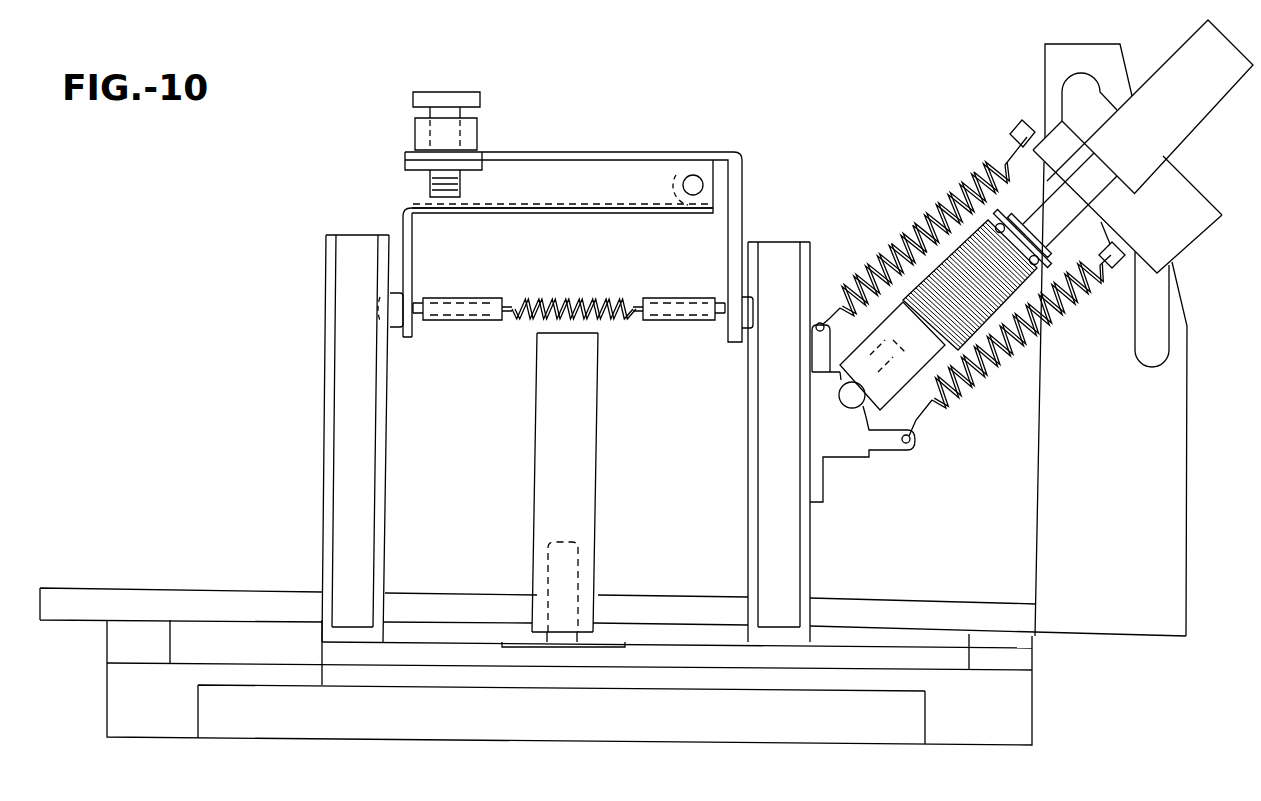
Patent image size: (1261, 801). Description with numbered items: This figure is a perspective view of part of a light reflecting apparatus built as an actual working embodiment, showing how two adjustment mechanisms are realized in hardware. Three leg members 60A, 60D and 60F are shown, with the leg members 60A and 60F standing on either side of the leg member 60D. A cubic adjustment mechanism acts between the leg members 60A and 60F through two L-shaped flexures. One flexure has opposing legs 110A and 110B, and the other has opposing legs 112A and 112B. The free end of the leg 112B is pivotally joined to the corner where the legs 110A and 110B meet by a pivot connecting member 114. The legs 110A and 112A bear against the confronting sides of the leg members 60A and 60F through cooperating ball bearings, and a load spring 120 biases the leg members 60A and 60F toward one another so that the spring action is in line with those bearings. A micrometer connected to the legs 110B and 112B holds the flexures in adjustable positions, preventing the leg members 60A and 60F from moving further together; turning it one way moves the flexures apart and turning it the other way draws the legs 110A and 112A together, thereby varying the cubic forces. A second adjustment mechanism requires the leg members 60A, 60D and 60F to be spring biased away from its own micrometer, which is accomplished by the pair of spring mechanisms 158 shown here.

The leg member 60A is at (770, 411).
The leg member 60D is at (543, 425).
The leg member 60F is at (327, 402).
The leg of L-shaped flexure 110A is at (742, 218).
The leg of L-shaped flexure 110B is at (601, 152).
The leg of L-shaped flexure 112A is at (403, 212).
The leg of L-shaped flexure 112B is at (590, 213).
The pivot connecting member 114 is at (699, 182).
The load spring 120 is at (560, 303).
The spring mechanisms 158 is at (930, 193).